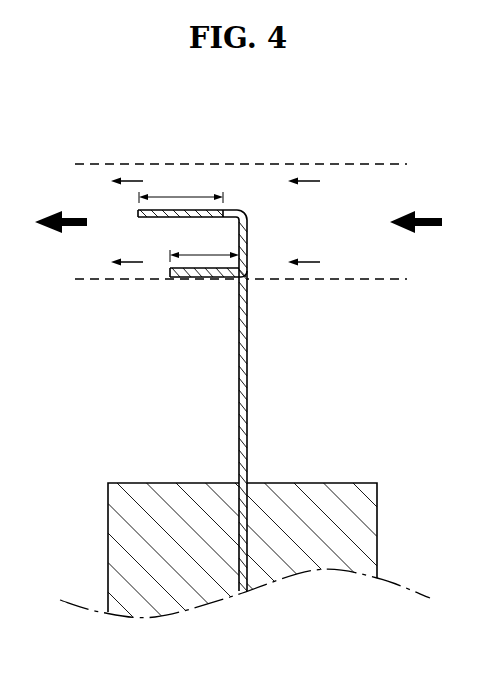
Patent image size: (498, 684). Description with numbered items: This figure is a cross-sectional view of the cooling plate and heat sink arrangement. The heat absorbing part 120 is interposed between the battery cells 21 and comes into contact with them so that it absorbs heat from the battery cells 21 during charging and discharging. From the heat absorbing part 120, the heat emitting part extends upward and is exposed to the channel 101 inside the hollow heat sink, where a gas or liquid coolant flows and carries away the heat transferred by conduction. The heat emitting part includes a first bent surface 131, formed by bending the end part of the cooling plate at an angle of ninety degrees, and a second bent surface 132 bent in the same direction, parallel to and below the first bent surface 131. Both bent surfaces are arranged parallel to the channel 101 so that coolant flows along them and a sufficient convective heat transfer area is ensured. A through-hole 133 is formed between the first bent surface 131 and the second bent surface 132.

The channel 101 is at (340, 192).
The battery cell 21 is at (340, 498).
The heat absorbing part 120 is at (216, 357).
The first bent surface 131 is at (192, 196).
The second bent surface 132 is at (208, 254).
The through-hole 133 is at (247, 237).